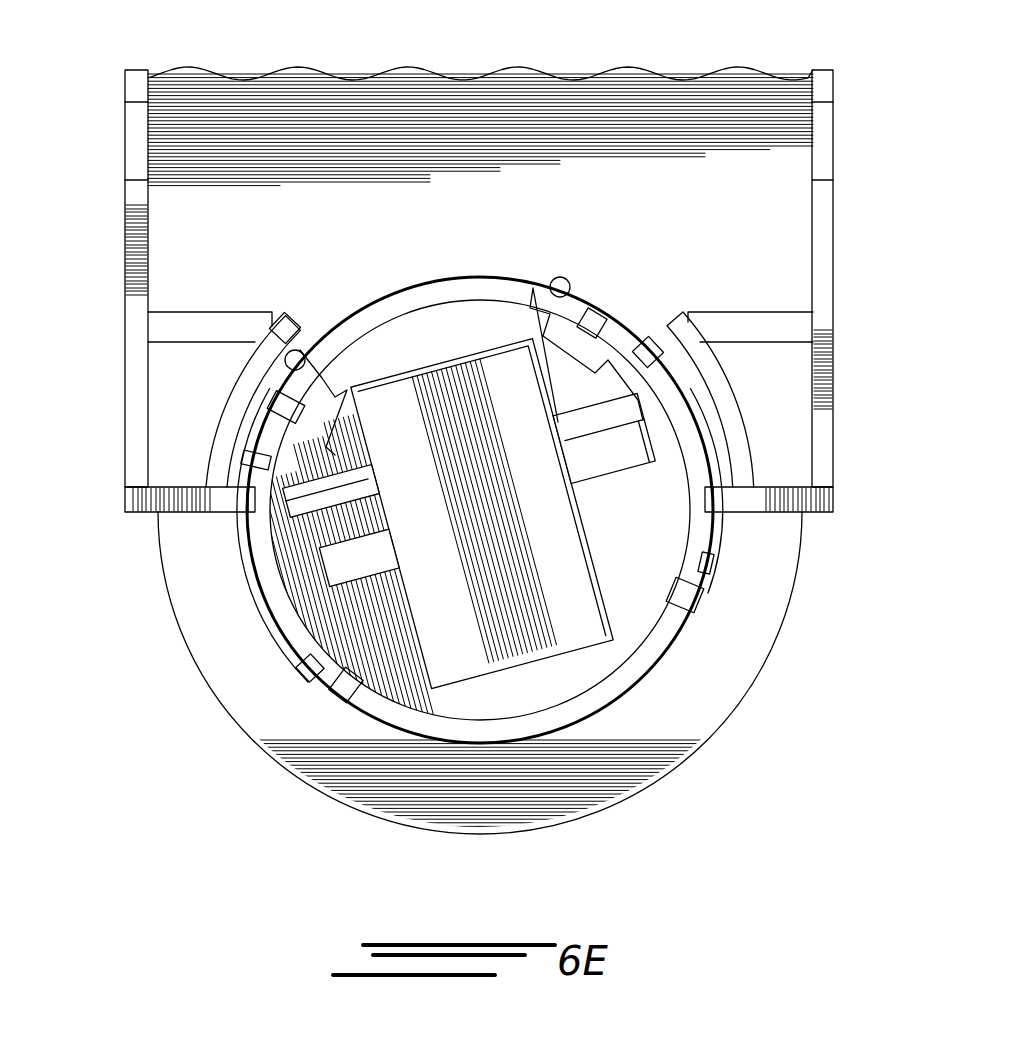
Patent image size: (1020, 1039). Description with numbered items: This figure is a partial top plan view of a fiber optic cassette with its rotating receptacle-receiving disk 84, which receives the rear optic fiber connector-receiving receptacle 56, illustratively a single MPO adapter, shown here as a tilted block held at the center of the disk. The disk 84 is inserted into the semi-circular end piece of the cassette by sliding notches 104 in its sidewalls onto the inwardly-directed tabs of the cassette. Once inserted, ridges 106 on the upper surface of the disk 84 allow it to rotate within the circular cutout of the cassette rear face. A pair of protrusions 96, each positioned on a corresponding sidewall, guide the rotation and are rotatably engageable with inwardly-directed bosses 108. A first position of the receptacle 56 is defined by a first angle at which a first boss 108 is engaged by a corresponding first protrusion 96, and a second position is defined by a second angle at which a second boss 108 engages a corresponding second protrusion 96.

The rear optic fiber connector-receiving receptacle 56 is at (455, 620).
The rotating receptacle-receiving disk 84 is at (650, 640).
The protrusions 96 is at (688, 345).
The notches 104 is at (687, 597).
The ridges 106 is at (700, 443).
The inwardly-directed bosses 108 is at (288, 347).